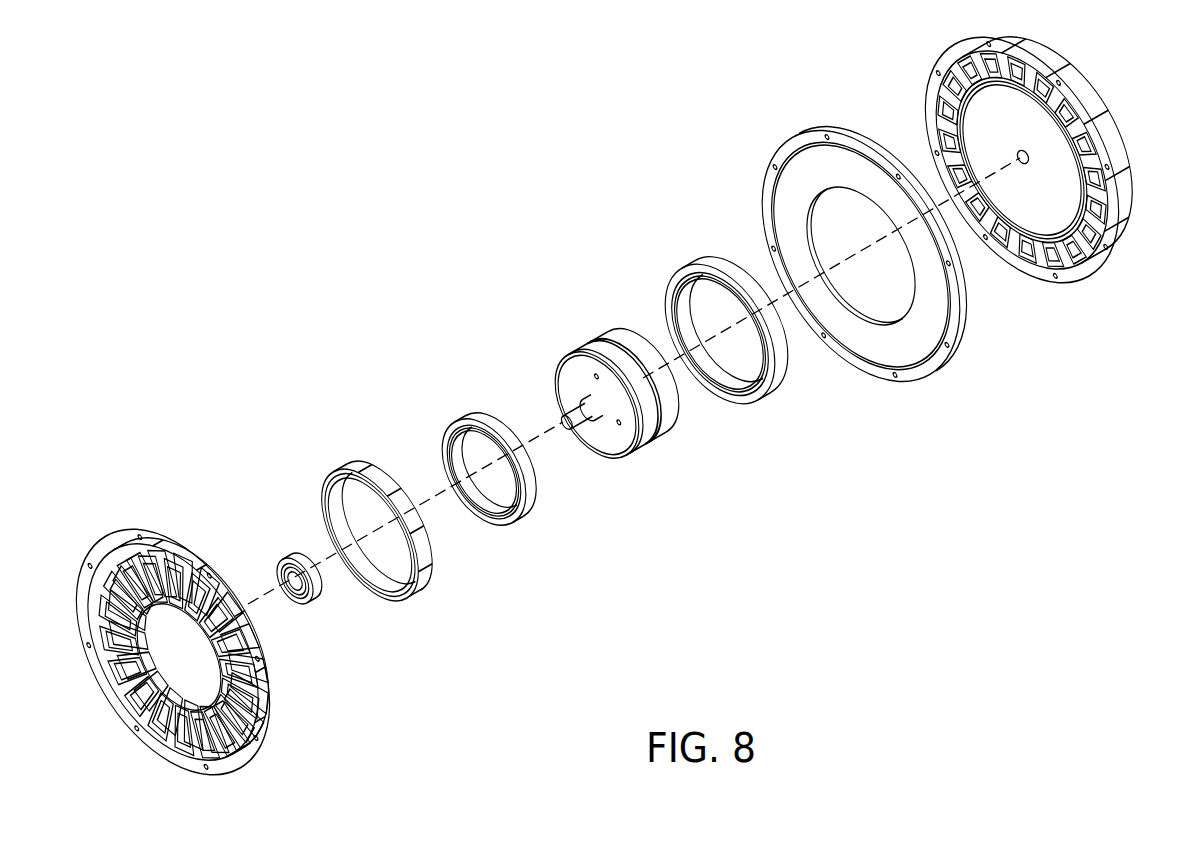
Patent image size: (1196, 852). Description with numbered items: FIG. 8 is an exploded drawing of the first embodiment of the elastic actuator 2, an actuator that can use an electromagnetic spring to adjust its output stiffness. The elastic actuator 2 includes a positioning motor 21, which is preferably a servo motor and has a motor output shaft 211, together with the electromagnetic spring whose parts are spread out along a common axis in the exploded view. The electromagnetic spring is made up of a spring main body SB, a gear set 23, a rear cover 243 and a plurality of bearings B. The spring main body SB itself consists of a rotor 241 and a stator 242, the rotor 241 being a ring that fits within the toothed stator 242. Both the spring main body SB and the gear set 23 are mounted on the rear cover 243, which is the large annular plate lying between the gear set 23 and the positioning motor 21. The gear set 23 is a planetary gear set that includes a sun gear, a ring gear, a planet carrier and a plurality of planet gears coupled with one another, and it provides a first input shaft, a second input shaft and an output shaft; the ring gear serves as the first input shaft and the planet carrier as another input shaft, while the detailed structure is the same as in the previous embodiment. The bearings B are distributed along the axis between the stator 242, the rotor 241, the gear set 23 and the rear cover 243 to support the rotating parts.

The elastic actuator 2 is at (336, 166).
The positioning motor 21 is at (1073, 90).
The motor output shaft 211 is at (1018, 157).
The gear set 23 is at (592, 348).
The rotor 241 is at (357, 470).
The stator 242 is at (187, 545).
The rear cover 243 is at (830, 132).
The spring main body SB is at (220, 415).
The bearings B is at (285, 560).